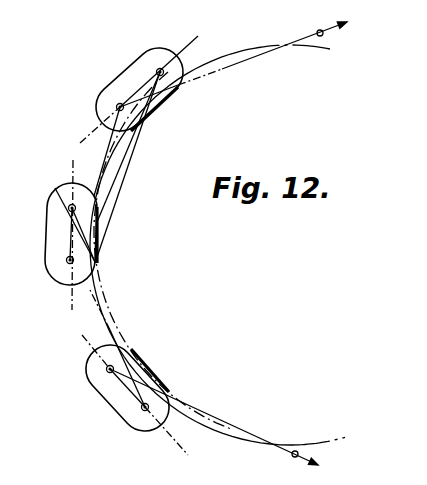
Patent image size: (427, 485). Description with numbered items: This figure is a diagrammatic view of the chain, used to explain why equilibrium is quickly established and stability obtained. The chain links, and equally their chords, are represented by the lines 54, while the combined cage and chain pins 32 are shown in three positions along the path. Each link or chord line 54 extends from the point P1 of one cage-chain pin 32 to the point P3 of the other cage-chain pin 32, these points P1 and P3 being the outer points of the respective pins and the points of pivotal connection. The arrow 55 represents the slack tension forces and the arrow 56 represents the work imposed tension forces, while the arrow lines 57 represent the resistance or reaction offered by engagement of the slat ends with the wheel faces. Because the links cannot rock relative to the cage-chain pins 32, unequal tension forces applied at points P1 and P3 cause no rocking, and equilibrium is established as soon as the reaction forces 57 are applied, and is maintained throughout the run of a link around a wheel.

The combined cage and chain pin 32 is at (118, 76).
The link or chord line 54 is at (252, 63).
The slack tension force arrow 55 is at (348, 26).
The work imposed tension force arrow 56 is at (318, 461).
The resistance or reaction arrow line 57 is at (182, 97).
The point of pivotal connection P1 is at (97, 108).
The point of pivotal connection P3 is at (73, 376).